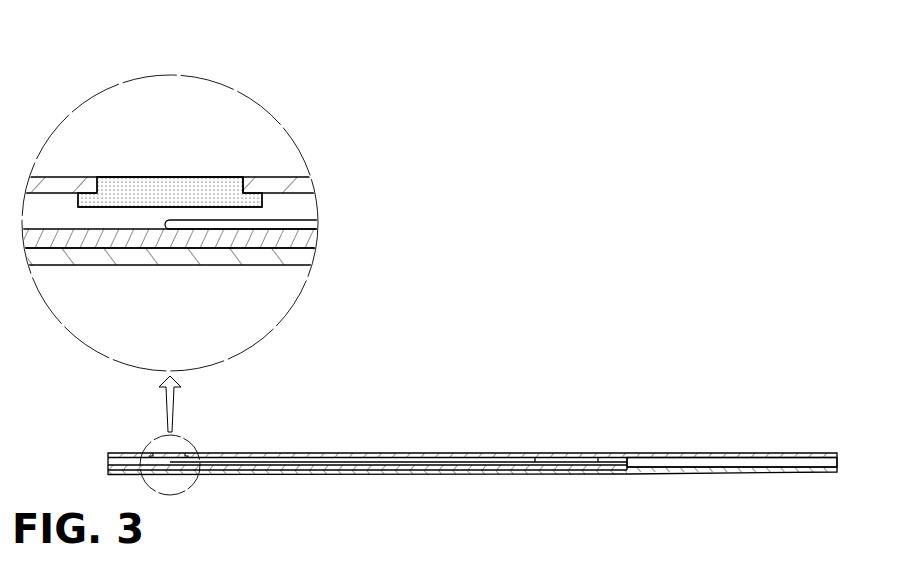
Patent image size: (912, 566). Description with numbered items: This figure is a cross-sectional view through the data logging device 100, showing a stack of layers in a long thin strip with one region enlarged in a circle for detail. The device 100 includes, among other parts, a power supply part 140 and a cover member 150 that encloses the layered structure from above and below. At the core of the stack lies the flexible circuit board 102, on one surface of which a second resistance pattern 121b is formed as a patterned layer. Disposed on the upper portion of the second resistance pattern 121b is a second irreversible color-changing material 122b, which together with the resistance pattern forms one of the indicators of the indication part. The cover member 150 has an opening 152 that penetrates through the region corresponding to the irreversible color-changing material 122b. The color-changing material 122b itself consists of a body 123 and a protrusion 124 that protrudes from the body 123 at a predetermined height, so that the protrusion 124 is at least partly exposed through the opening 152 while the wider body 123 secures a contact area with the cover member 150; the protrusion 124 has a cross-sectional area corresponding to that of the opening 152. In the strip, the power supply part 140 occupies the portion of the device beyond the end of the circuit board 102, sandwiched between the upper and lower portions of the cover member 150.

The data logging device 100 is at (768, 127).
The flexible circuit board 102 is at (308, 236).
The second resistance pattern 121b is at (315, 224).
The second irreversible color-changing material 122b is at (66, 45).
The body 123 is at (87, 201).
The protrusion 124 is at (128, 189).
The power supply part 140 is at (758, 462).
The cover member 150 is at (295, 186).
The opening 152 is at (245, 186).